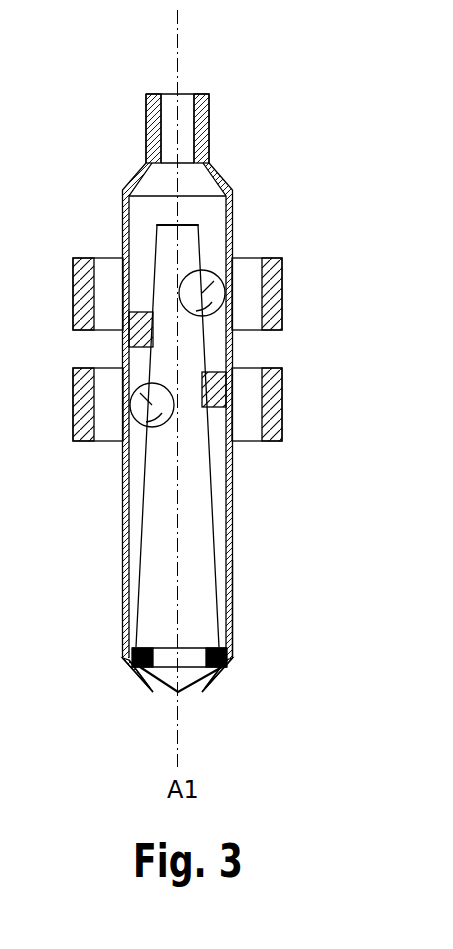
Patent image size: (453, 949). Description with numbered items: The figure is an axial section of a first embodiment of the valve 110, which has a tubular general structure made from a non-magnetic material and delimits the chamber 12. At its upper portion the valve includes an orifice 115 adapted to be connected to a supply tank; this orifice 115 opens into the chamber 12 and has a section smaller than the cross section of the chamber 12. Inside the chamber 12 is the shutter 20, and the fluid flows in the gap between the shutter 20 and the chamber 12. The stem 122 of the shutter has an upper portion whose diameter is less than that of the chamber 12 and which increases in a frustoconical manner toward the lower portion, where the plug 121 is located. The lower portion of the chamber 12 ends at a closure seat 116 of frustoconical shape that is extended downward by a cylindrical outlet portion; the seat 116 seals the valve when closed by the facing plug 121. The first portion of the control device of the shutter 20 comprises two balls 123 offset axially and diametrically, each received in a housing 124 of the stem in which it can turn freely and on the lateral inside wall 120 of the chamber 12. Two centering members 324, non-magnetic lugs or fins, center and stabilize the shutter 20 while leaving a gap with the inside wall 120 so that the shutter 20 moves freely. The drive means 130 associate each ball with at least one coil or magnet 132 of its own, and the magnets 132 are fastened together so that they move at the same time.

The valve 110 is at (226, 110).
The orifice 115 is at (170, 92).
The chamber 12 is at (189, 201).
The housing 124 is at (172, 288).
The ball 123 is at (221, 272).
The drive means 130 is at (239, 313).
The centering member 324 is at (142, 361).
The magnet 132 is at (270, 416).
The inside wall 120 is at (233, 523).
The stem 122 is at (198, 565).
The shutter 20 is at (228, 602).
The closure seat 116 is at (131, 682).
The plug 121 is at (177, 682).